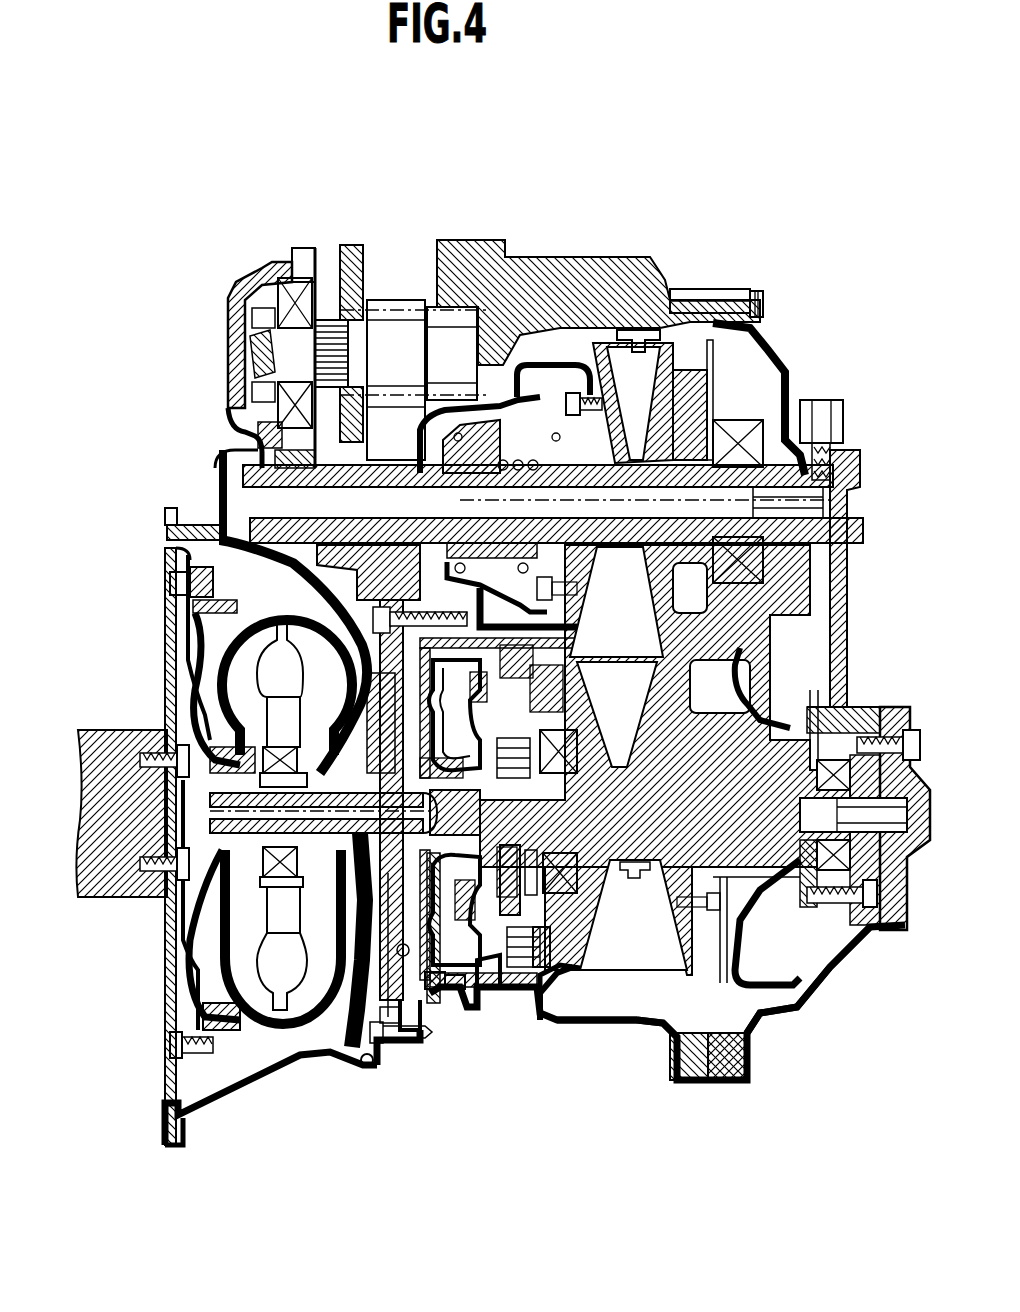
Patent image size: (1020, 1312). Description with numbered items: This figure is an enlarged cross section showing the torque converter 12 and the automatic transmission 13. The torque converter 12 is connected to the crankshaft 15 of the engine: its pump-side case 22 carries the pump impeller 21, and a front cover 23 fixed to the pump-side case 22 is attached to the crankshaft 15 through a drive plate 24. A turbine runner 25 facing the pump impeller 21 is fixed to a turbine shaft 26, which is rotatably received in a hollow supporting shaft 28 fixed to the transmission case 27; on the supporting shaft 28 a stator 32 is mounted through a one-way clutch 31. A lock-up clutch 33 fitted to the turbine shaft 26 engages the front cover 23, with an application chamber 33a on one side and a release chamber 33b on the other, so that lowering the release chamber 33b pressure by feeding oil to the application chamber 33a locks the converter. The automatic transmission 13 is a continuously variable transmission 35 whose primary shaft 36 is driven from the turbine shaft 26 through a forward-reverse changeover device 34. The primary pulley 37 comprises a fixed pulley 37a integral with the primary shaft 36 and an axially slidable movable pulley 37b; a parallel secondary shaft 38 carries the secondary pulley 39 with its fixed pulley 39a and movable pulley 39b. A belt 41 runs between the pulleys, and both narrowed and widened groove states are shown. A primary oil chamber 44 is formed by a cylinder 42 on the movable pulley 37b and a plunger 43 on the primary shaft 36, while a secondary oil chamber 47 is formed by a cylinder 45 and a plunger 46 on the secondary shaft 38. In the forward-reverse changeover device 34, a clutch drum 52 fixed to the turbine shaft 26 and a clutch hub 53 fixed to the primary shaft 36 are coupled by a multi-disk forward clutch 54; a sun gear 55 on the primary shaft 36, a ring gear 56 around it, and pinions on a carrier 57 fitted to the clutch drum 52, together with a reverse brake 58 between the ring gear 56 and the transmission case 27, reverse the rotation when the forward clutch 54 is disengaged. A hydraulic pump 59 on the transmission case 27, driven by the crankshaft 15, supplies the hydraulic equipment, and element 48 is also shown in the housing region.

The torque converter 12 is at (253, 1042).
The automatic transmission 13 is at (750, 1000).
The crankshaft 15 is at (128, 893).
The pump impeller 21 is at (300, 1062).
The pump-side case 22 is at (262, 622).
The front cover 23 is at (197, 668).
The drive plate 24 is at (185, 920).
The turbine runner 25 is at (228, 1005).
The turbine shaft 26 is at (250, 812).
The transmission case 27 is at (640, 1030).
The supporting shaft 28 is at (345, 1040).
The one-way clutch 31 is at (262, 770).
The stator 32 is at (280, 718).
The lock-up clutch 33 is at (205, 1060).
The application chamber 33a is at (215, 1035).
The release chamber 33b is at (205, 990).
The forward-reverse changeover device 34 is at (480, 1010).
The continuously variable transmission 35 is at (770, 630).
The primary shaft 36 is at (850, 720).
The primary pulley 37 is at (640, 980).
The fixed pulley 37a is at (570, 1040).
The movable pulley 37b is at (720, 1040).
The secondary shaft 38 is at (830, 470).
The secondary pulley 39 is at (690, 350).
The fixed pulley 39a is at (700, 415).
The movable pulley 39b is at (610, 330).
The belt 41 is at (653, 340).
The cylinder 42 is at (780, 965).
The plunger 43 is at (745, 690).
The primary oil chamber 44 is at (845, 930).
The cylinder 45 is at (568, 393).
The plunger 46 is at (460, 428).
The secondary oil chamber 47 is at (540, 397).
The pump housing 48 is at (228, 402).
The clutch drum 52 is at (410, 1030).
The clutch hub 53 is at (425, 1010).
The forward clutch 54 is at (452, 1010).
The sun gear 55 is at (618, 862).
The ring gear 56 is at (500, 745).
The carrier 57 is at (500, 685).
The reverse brake 58 is at (518, 935).
The hydraulic pump 59 is at (365, 1068).